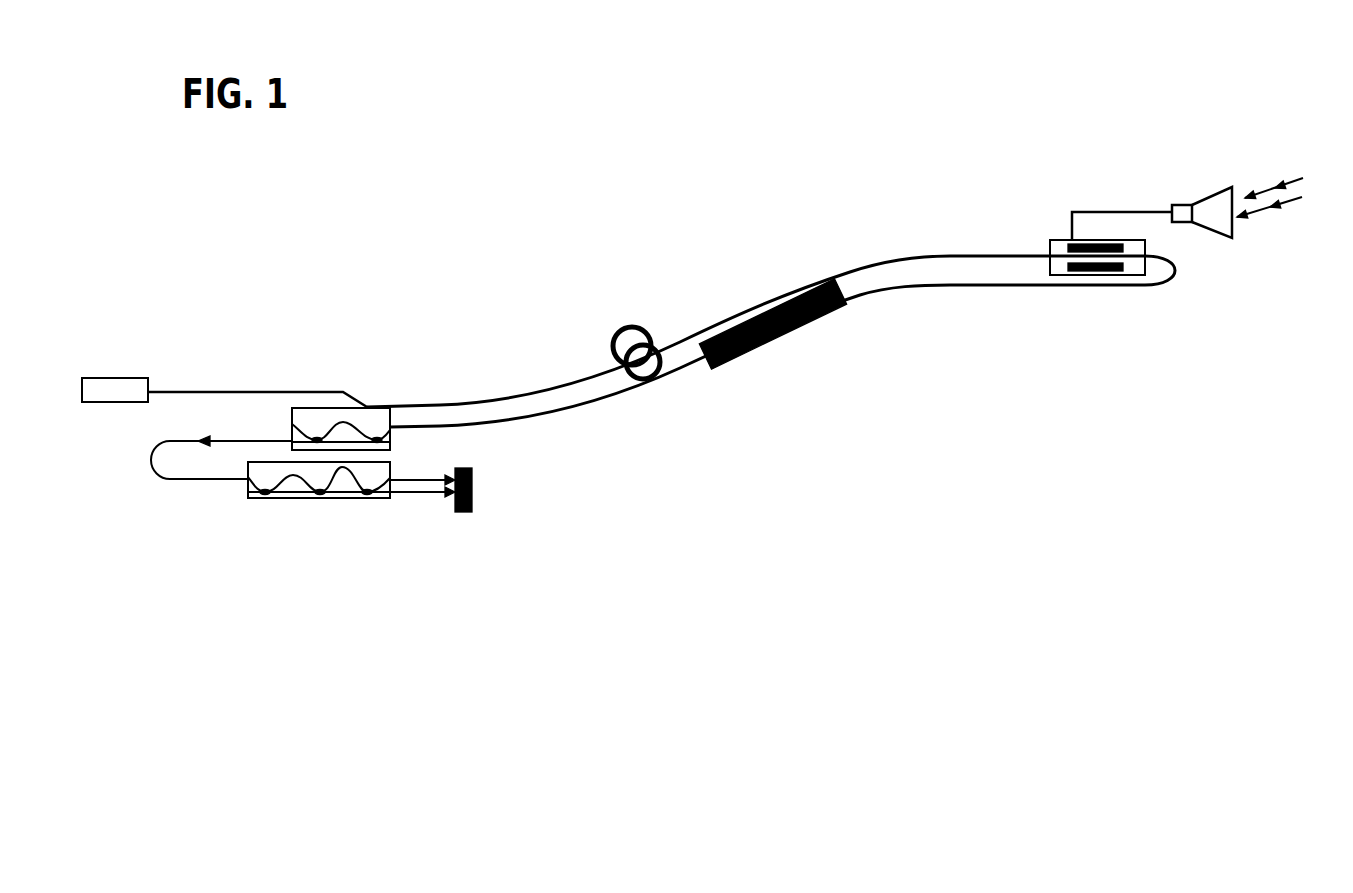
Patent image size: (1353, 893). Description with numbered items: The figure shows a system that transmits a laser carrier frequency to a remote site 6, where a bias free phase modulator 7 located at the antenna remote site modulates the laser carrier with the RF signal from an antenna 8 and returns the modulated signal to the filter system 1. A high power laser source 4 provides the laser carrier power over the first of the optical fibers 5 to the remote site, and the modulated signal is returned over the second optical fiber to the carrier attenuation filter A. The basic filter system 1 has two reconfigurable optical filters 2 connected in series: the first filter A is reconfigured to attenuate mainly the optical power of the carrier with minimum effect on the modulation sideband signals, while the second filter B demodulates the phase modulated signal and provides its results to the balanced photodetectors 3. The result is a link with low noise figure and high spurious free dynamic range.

The filter system 1 is at (470, 326).
The reconfigurable optical filters 2 is at (405, 447).
The balanced photodetectors 3 is at (472, 508).
The high power laser source 4 is at (108, 378).
The optical fibers 5 is at (777, 340).
The remote site 6 is at (1040, 202).
The bias free phase modulator 7 is at (1145, 245).
The antenna 8 is at (1232, 190).